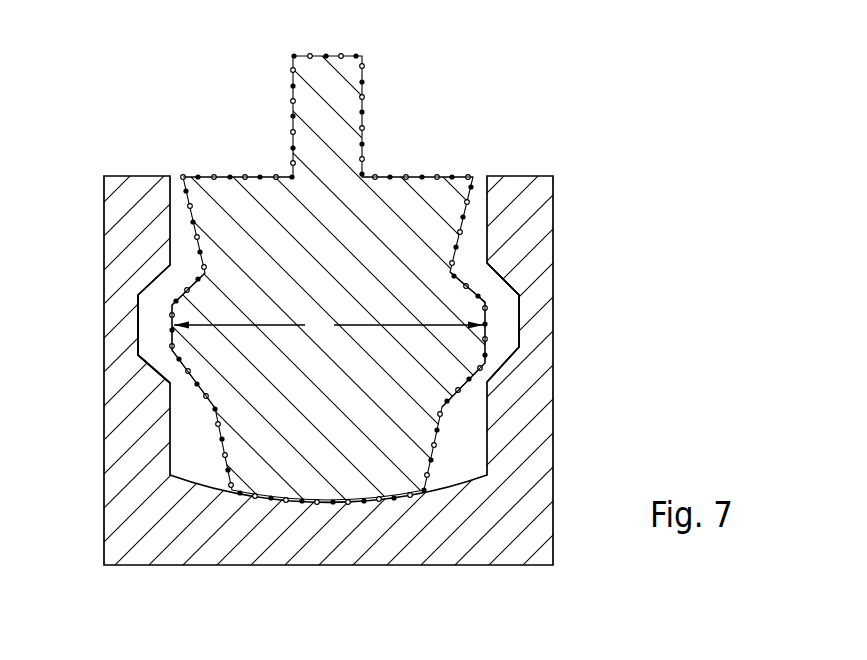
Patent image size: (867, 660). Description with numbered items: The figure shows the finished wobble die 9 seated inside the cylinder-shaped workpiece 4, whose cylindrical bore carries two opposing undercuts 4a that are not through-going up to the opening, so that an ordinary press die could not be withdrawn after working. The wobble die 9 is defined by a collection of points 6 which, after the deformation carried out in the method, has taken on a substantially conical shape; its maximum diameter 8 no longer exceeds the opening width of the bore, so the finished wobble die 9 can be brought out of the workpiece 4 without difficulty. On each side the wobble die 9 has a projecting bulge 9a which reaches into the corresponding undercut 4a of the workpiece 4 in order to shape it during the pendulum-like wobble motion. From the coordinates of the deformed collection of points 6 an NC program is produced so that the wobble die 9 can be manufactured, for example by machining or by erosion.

The workpiece 4 is at (545, 256).
The undercuts 4a is at (513, 307).
The collection of points 6 is at (233, 177).
The maximum diameter 8 is at (328, 326).
The wobble die 9 is at (402, 195).
The projecting bulge 9a is at (472, 341).